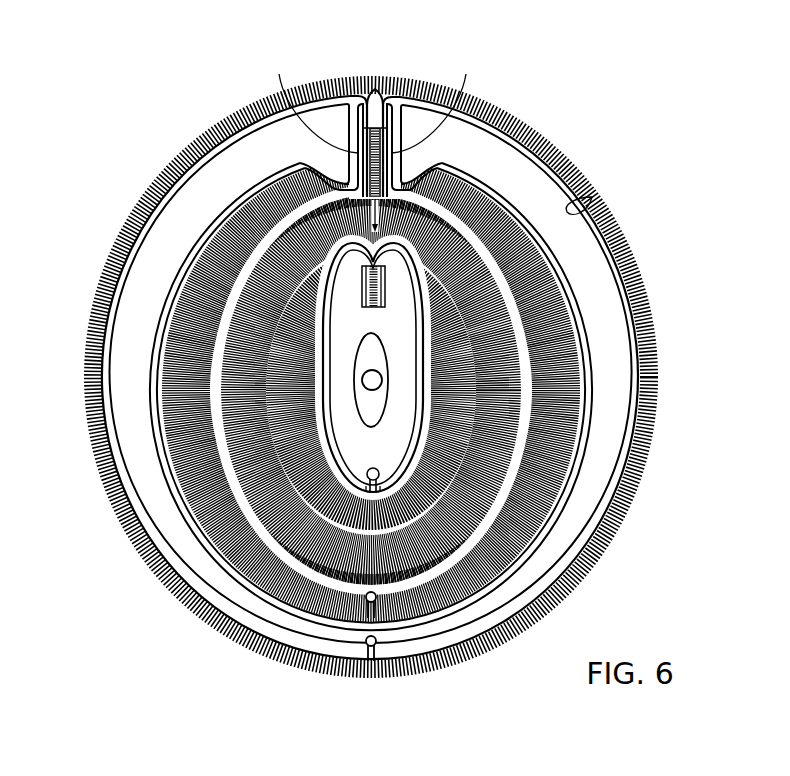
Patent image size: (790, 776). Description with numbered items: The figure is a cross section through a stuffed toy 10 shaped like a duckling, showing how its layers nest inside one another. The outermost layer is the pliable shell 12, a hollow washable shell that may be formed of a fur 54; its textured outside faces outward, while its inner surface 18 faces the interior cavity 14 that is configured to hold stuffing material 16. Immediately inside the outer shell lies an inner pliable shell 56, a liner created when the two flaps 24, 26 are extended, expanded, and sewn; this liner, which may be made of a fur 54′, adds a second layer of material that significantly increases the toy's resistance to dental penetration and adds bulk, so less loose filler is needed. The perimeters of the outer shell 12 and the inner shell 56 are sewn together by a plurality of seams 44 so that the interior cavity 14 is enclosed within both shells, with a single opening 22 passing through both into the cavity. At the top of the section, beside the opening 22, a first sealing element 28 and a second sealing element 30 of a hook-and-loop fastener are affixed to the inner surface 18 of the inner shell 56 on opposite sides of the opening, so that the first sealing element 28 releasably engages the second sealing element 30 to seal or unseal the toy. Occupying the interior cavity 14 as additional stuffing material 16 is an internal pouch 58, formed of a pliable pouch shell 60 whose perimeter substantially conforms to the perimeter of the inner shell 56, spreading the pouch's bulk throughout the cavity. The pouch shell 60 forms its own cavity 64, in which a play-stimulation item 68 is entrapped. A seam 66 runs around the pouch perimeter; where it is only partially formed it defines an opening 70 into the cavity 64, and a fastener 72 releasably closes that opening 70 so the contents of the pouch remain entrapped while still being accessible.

The stuffed toy 10 is at (377, 359).
The pliable shell 12 is at (614, 236).
The interior cavity 14 is at (552, 197).
The stuffing material 16 is at (380, 414).
The inner surface 18 is at (592, 197).
The opening 22 is at (377, 68).
The flap 24 is at (309, 102).
The flap 26 is at (437, 102).
The first sealing element 28 is at (320, 94).
The second sealing element 30 is at (425, 95).
The seam 44 is at (369, 606).
The fur 54 is at (99, 456).
The fur 54′ is at (182, 456).
The inner pliable shell 56 is at (585, 468).
The internal pouch 58 is at (412, 458).
The pliable pouch shell 60 is at (369, 493).
The cavity 64 is at (352, 323).
The seam 66 is at (374, 494).
The play-stimulation item 68 is at (325, 336).
The opening 70 is at (392, 183).
The fastener 72 is at (385, 305).